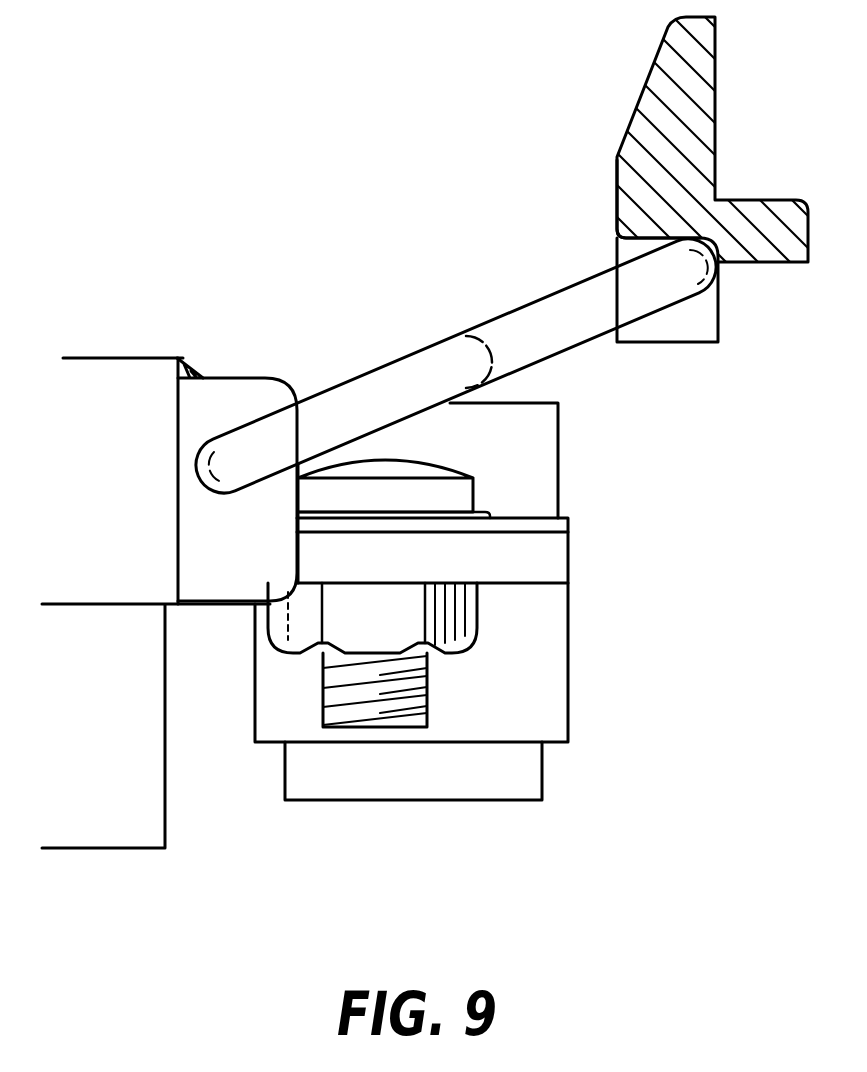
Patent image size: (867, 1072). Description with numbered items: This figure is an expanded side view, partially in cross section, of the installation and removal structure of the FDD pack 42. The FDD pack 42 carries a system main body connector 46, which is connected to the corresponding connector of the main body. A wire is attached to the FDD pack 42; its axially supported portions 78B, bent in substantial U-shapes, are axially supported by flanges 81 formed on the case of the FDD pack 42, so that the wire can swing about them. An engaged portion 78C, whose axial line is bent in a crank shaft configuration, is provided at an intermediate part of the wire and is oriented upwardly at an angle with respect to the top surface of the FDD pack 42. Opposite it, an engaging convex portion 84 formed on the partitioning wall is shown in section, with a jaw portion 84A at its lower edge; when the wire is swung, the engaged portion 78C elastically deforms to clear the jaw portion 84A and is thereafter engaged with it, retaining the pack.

The FDD pack 42 is at (130, 355).
The system main body connector 46 is at (558, 668).
The axially supported portions 78B is at (388, 375).
The engaged portion 78C is at (660, 302).
The flanges 81 is at (242, 393).
The engaging convex portion 84 is at (652, 117).
The jaw portion 84A is at (647, 197).